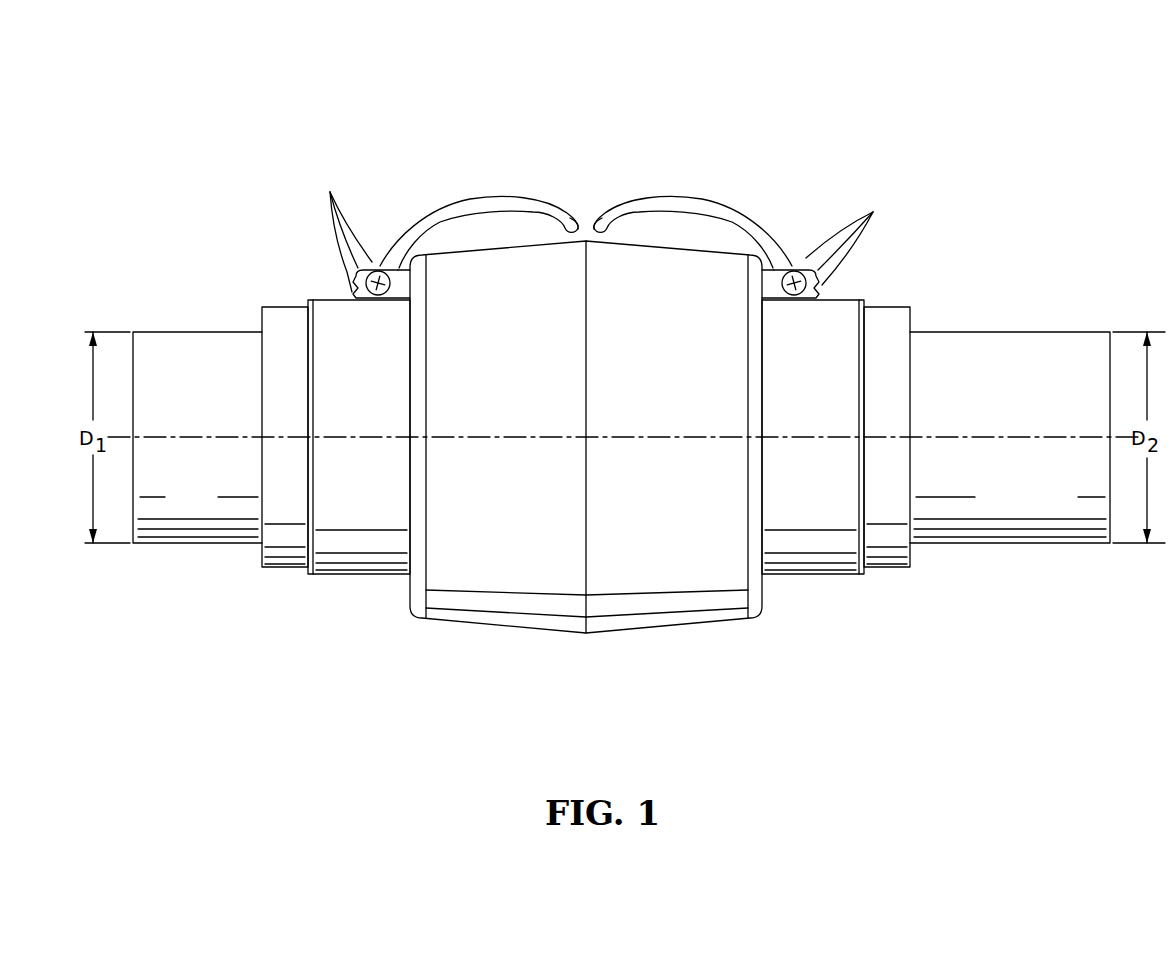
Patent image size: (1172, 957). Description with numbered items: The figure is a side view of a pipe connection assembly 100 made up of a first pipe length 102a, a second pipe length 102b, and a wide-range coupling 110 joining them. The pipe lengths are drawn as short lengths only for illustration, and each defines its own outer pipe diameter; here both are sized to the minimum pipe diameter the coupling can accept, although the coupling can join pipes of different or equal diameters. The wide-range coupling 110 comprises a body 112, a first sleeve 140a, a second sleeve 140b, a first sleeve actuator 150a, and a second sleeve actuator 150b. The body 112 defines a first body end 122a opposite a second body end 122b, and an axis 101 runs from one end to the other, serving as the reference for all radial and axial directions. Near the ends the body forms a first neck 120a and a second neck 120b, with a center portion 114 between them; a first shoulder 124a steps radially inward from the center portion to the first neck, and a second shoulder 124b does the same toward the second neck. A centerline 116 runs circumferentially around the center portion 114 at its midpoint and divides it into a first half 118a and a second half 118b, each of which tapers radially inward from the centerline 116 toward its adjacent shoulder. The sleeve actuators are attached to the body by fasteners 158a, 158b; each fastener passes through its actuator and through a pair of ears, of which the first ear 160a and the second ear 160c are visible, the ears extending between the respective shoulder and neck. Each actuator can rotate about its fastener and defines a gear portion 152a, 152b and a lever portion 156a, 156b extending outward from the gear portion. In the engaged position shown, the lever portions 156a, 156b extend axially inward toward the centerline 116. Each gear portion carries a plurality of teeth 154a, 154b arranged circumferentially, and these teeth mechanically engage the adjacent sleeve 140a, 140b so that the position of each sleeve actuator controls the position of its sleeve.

The pipe connection assembly 100 is at (244, 98).
The axis 101 is at (990, 439).
The first pipe length 102a is at (198, 348).
The second pipe length 102b is at (1043, 342).
The wide-range coupling 110 is at (598, 115).
The body 112 is at (627, 615).
The center portion 114 is at (543, 615).
The centerline 116 is at (588, 403).
The first half 118a is at (478, 605).
The second half 118b is at (703, 618).
The first neck 120a is at (347, 557).
The second neck 120b is at (818, 557).
The first body end 122a is at (307, 528).
The second body end 122b is at (867, 537).
The first shoulder 124a is at (412, 583).
The second shoulder 124b is at (765, 590).
The first sleeve 140a is at (285, 317).
The second sleeve 140b is at (898, 318).
The first sleeve actuator 150a is at (428, 222).
The second sleeve actuator 150b is at (756, 238).
The gear portion 152a is at (352, 288).
The gear portion 152b is at (822, 284).
The teeth 154a is at (336, 232).
The teeth 154b is at (867, 243).
The lever portion 156a is at (497, 197).
The lever portion 156b is at (702, 200).
The fastener 158a is at (378, 296).
The fastener 158b is at (792, 296).
The first ear 160a is at (403, 285).
The second ear 160c is at (773, 280).